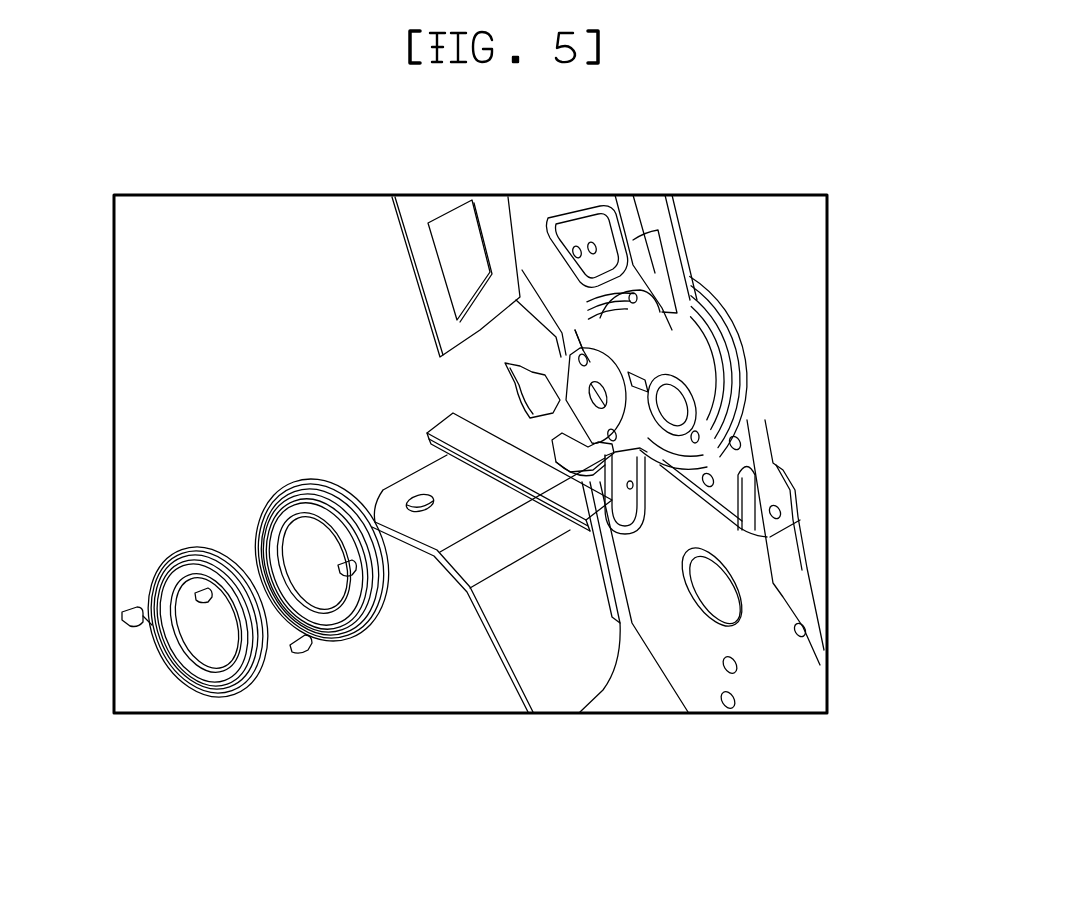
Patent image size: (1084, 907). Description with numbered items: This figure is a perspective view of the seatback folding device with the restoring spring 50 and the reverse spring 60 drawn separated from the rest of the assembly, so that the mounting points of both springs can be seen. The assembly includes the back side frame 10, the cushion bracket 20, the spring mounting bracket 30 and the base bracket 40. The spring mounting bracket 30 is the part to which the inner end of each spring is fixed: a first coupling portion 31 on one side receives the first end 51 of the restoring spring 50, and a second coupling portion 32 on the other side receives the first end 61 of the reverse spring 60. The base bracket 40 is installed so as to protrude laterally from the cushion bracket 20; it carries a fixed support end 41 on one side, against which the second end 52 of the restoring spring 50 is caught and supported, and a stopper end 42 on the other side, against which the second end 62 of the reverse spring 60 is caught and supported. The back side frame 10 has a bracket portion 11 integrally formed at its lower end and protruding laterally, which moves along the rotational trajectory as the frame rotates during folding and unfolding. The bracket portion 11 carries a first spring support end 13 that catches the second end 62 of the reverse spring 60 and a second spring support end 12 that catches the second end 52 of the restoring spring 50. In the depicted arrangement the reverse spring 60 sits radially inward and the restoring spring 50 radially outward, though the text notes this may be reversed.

The back side frame 10 is at (683, 240).
The bracket portion 11 is at (590, 420).
The second spring support end 12 is at (560, 432).
The first spring support end 13 is at (613, 457).
The cushion bracket 20 is at (815, 558).
The spring mounting bracket 30 is at (655, 393).
The first coupling portion 31 is at (596, 362).
The second coupling portion 32 is at (662, 400).
The base bracket 40 is at (513, 403).
The fixed support end 41 is at (537, 371).
The stopper end 42 is at (640, 375).
The restoring spring 50 is at (170, 548).
The first end of the restoring spring 51 is at (203, 595).
The second end of the restoring spring 52 is at (130, 627).
The reverse spring 60 is at (296, 472).
The first end of the reverse spring 61 is at (343, 573).
The second end of the reverse spring 62 is at (300, 643).